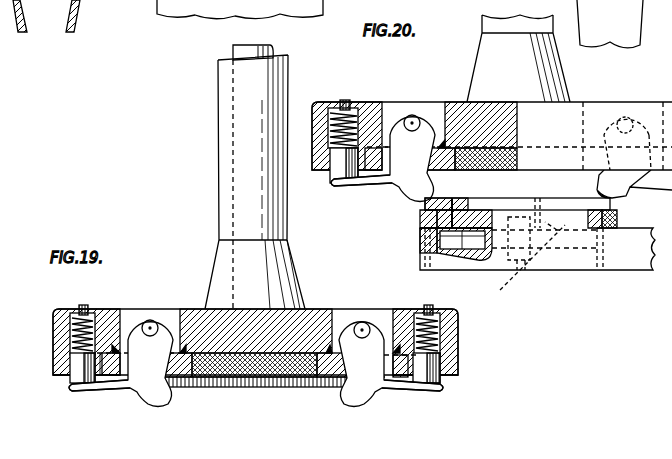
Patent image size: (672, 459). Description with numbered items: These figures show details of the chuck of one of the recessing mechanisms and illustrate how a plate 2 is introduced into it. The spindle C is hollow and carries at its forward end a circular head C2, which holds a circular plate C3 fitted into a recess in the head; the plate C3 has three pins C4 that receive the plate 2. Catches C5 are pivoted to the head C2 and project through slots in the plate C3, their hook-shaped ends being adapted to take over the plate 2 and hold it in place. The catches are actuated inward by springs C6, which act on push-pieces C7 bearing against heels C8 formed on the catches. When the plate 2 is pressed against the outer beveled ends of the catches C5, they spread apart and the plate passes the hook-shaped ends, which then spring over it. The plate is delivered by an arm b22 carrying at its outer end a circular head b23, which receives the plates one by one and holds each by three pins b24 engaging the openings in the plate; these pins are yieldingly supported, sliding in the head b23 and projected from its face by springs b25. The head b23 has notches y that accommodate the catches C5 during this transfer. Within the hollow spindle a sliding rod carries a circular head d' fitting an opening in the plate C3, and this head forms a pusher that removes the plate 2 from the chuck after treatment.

In FIG. 19, the spindle C is at (241, 78).
In FIG. 20, the spindle C is at (630, 190).
In FIG. 19, the circular head C2 is at (200, 325).
In FIG. 20, the circular head C2 is at (590, 110).
In FIG. 19, the circular plate C3 is at (181, 388).
In FIG. 20, the circular plate C3 is at (438, 147).
In FIG. 19, the pins C4 is at (68, 370).
In FIG. 19, the catches C5 is at (137, 392).
In FIG. 20, the catches C5 is at (408, 182).
In FIG. 19, the springs C6 is at (70, 337).
In FIG. 20, the springs C6 is at (311, 107).
In FIG. 20, the push-pieces C7 is at (337, 173).
In FIG. 19, the heels C8 is at (78, 396).
In FIG. 20, the heels C8 is at (372, 188).
In FIG. 19, the circular head d' is at (254, 387).
In FIG. 20, the circular head d' is at (486, 114).
In FIG. 19, the plate 2 is at (284, 388).
In FIG. 20, the plate 2 is at (517, 200).
In FIG. 20, the notches y is at (438, 213).
In FIG. 20, the arm b22 is at (640, 260).
In FIG. 20, the circular head b23 is at (592, 217).
In FIG. 20, the pins b24 is at (422, 228).
In FIG. 20, the springs b25 is at (467, 237).